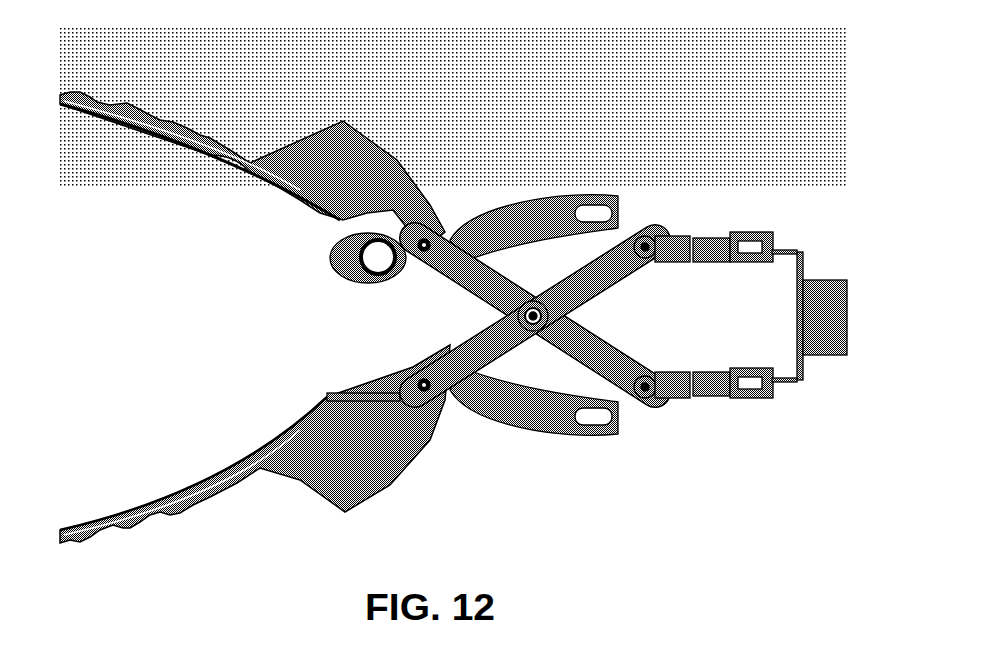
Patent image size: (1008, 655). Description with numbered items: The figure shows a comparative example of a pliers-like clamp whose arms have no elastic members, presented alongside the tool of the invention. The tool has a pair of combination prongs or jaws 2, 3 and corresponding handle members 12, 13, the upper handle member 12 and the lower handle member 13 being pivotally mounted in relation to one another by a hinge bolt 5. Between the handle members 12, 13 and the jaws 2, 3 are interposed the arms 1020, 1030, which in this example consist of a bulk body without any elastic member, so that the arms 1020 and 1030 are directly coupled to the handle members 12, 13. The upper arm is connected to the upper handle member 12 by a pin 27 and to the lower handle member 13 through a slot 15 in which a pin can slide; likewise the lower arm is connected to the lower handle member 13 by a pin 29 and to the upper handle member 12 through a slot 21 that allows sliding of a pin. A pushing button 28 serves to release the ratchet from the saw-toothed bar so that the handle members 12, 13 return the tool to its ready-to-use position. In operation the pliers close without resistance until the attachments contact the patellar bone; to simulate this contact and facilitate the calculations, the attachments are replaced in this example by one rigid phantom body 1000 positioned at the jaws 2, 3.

The upper handle member 12 is at (207, 120).
The lower handle member 13 is at (250, 490).
The hinge bolt 5 is at (530, 302).
The pin 27 is at (428, 240).
The pin 29 is at (430, 392).
The pushing button 28 is at (375, 258).
The slot 15 is at (680, 238).
The slot 21 is at (667, 396).
The arm 1020 is at (557, 215).
The arm 1030 is at (520, 410).
The jaw 2 is at (768, 240).
The jaw 3 is at (768, 392).
The phantom body 1000 is at (660, 137).